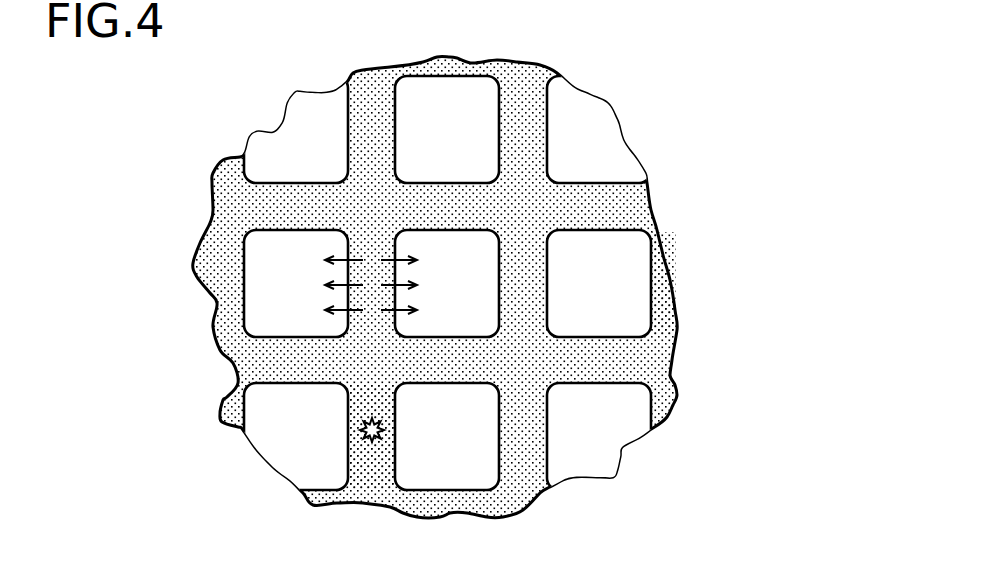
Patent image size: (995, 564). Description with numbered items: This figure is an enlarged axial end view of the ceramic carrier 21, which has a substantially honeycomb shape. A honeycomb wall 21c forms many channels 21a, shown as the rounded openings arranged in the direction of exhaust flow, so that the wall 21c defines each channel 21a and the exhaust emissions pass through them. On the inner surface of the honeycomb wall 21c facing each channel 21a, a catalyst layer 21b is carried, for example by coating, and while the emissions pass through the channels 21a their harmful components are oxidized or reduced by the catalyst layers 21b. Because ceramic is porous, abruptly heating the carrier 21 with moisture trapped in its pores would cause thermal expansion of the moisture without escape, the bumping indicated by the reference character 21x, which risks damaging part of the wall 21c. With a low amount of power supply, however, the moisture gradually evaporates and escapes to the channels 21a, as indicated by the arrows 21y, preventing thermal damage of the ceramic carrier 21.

The ceramic carrier 21 is at (627, 211).
The channel 21a is at (616, 292).
The catalyst layer 21b is at (648, 312).
The honeycomb wall 21c is at (372, 465).
The bumping of moisture 21x is at (362, 425).
The arrows 21y is at (338, 278).